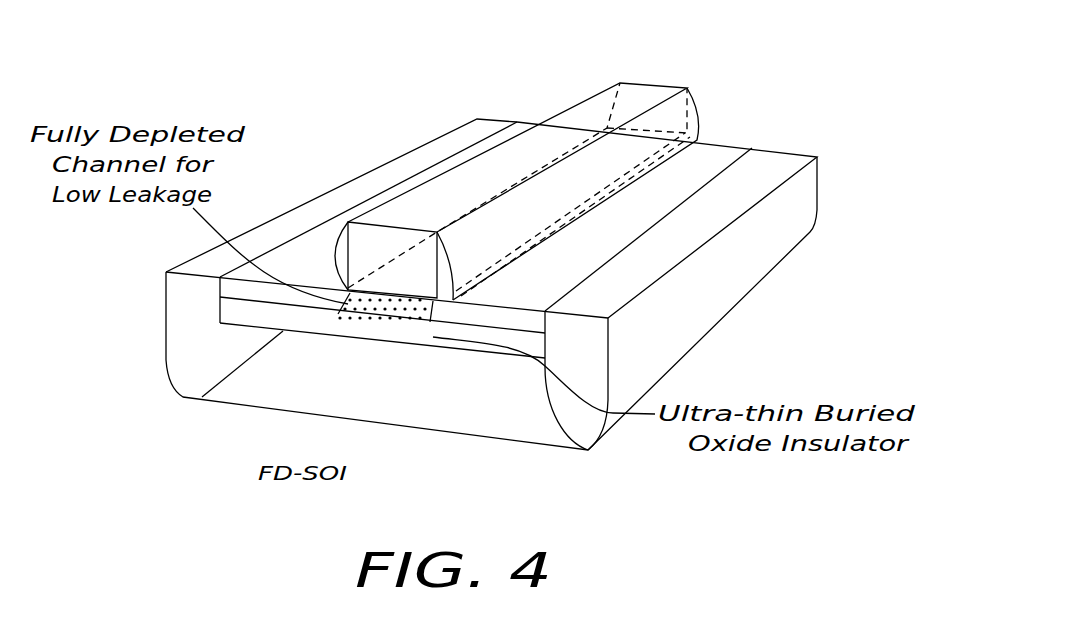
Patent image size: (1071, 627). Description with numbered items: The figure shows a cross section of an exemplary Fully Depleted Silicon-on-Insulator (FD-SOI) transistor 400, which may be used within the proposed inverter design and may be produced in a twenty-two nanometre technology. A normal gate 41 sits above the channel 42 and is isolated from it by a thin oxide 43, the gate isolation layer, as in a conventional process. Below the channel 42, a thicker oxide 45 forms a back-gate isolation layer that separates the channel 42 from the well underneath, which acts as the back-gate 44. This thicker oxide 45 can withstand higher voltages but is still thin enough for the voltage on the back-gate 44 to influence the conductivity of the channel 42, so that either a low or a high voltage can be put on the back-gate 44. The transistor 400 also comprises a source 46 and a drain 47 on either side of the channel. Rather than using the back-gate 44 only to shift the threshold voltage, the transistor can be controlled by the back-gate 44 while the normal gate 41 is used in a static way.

The FD-SOI transistor 400 is at (304, 47).
The normal gate 41 is at (638, 120).
The channel 42 is at (393, 320).
The thin oxide 43 is at (398, 262).
The back-gate 44 is at (512, 410).
The thicker oxide 45 is at (253, 312).
The source 46 is at (303, 262).
The drain 47 is at (710, 160).